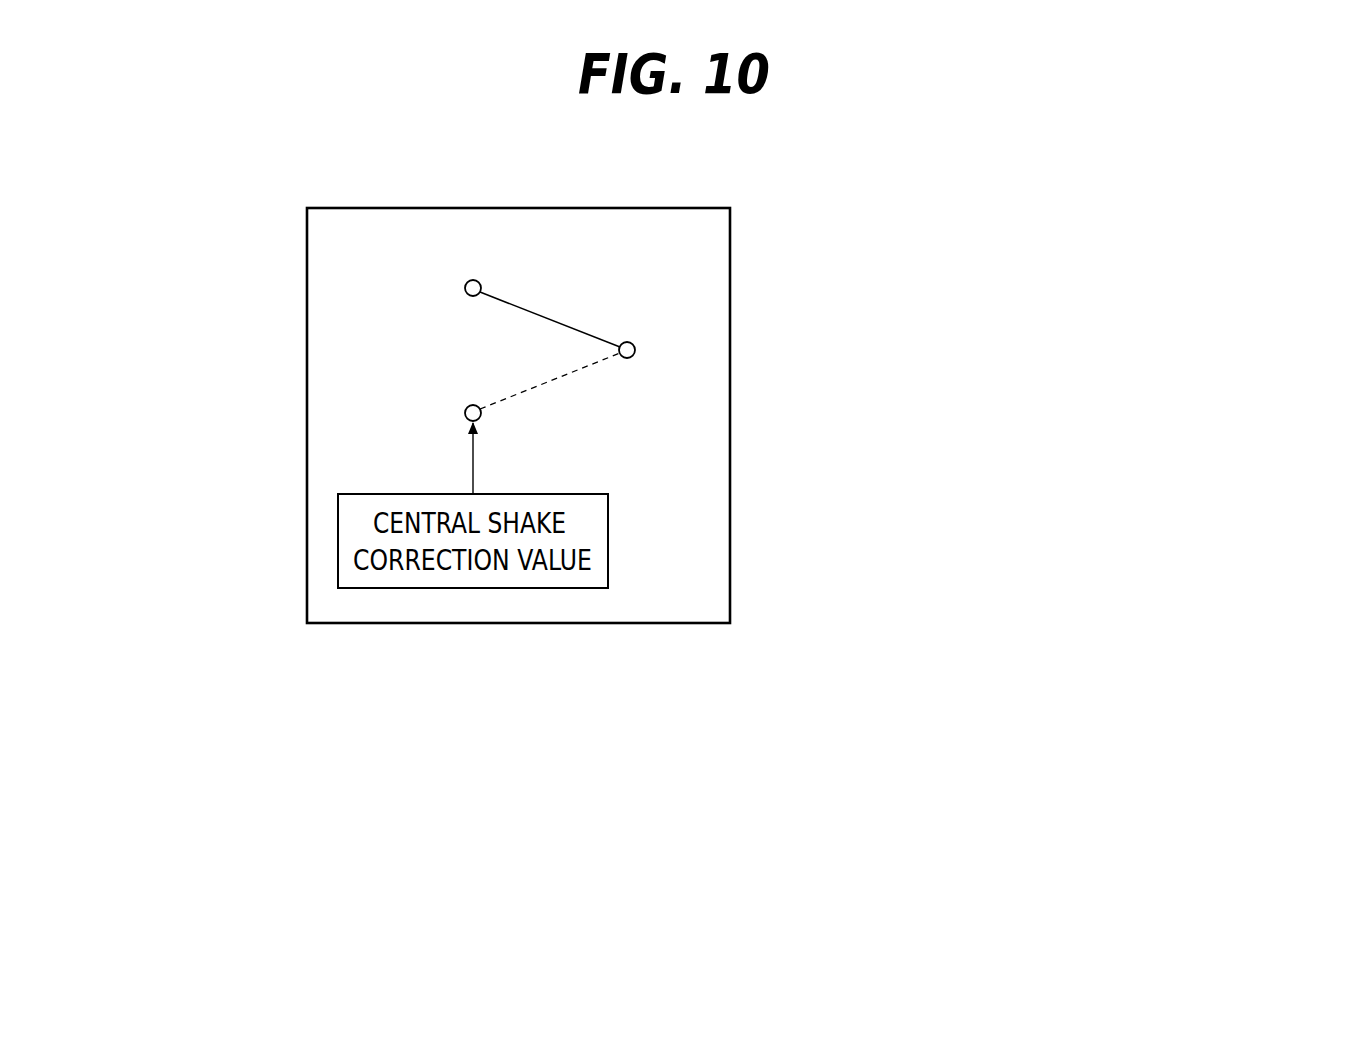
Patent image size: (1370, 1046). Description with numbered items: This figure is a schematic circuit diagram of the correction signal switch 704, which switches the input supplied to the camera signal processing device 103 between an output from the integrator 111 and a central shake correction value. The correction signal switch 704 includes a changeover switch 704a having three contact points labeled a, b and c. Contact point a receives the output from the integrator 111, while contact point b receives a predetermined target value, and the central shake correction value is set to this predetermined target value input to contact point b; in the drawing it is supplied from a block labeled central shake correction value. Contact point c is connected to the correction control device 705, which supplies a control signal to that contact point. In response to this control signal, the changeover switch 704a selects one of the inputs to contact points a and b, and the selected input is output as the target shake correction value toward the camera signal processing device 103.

The correction signal switch 704 is at (640, 208).
The changeover switch 704a is at (570, 300).
The integrator 111 is at (464, 288).
The camera signal processing device 103 is at (635, 350).
The correction control device 705 is at (628, 361).